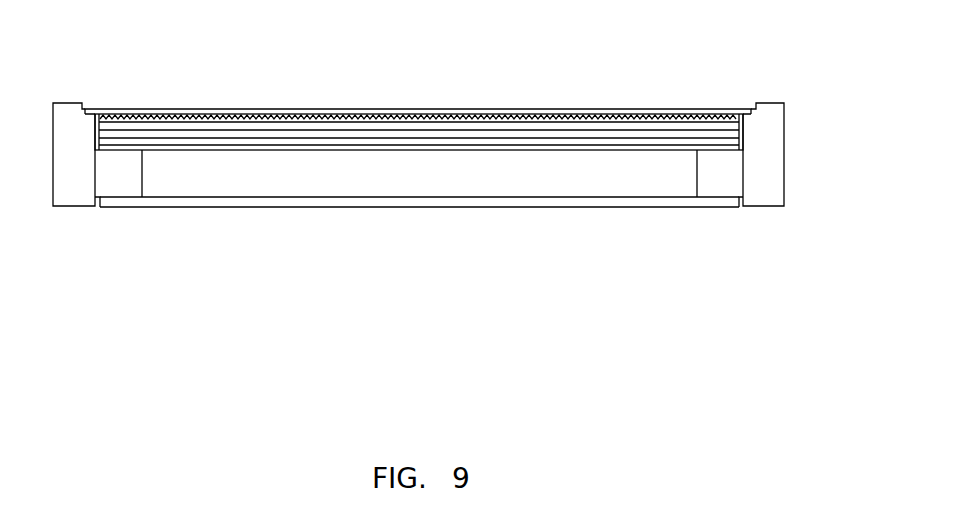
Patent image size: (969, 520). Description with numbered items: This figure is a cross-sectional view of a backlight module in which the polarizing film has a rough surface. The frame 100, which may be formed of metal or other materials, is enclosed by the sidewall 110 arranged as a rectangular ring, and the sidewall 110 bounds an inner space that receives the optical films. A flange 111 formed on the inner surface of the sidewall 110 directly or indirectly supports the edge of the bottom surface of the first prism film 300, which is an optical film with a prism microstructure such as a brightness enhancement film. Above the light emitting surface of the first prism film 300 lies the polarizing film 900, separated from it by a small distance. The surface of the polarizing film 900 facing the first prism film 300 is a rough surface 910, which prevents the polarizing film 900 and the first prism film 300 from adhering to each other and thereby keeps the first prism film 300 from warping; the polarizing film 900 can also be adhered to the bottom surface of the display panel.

The frame 100 is at (760, 185).
The sidewall 110 is at (745, 142).
The flange 111 is at (715, 151).
The first prism film 300 is at (630, 127).
The polarizing film 900 is at (642, 116).
The rough surface 910 is at (123, 115).